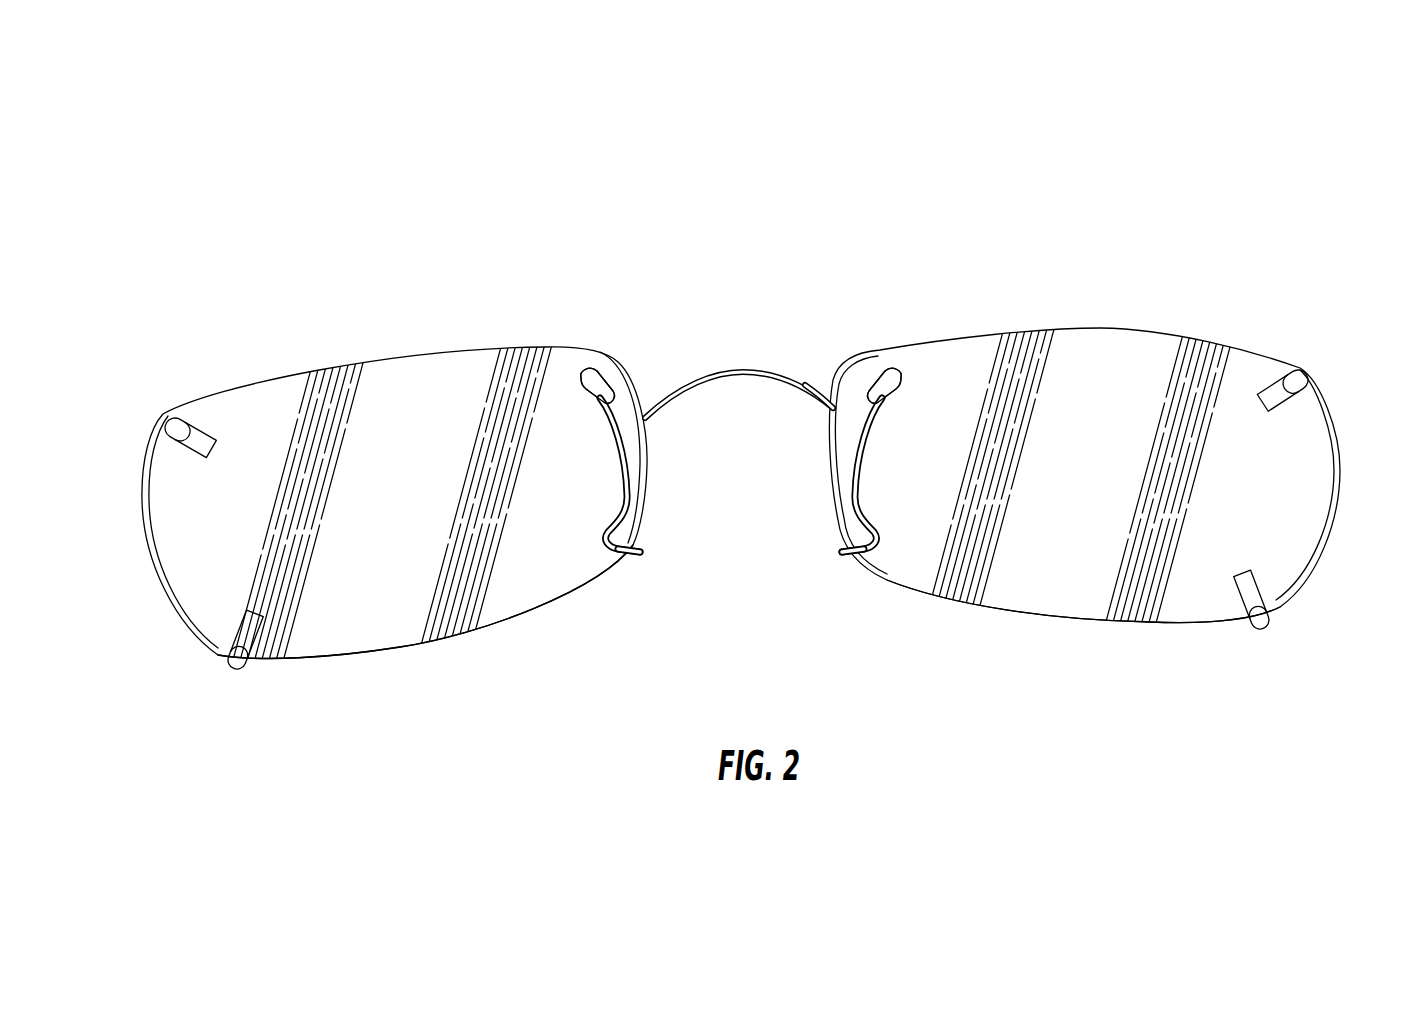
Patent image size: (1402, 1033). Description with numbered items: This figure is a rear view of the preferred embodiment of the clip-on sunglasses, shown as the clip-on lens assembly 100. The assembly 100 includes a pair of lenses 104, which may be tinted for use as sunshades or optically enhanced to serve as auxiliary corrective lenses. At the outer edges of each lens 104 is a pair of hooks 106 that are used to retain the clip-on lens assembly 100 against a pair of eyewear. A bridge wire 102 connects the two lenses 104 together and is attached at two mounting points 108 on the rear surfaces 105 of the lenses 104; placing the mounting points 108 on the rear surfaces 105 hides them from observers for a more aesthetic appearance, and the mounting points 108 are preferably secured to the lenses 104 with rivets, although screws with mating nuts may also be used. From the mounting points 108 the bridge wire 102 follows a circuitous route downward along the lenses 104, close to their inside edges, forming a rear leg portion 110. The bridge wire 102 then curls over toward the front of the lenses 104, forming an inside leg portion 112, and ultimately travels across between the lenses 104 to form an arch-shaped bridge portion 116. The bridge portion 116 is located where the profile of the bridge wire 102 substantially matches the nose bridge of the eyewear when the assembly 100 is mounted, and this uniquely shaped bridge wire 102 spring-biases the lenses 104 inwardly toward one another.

The clip-on lens assembly 100 is at (343, 240).
The bridge wire 102 is at (738, 368).
The lenses 104 is at (417, 517).
The rear surfaces 105 is at (387, 590).
The hooks 106 is at (167, 417).
The mounting points 108 is at (590, 378).
The rear leg portion 110 is at (617, 468).
The inside leg portion 112 is at (643, 551).
The bridge portion 116 is at (806, 370).